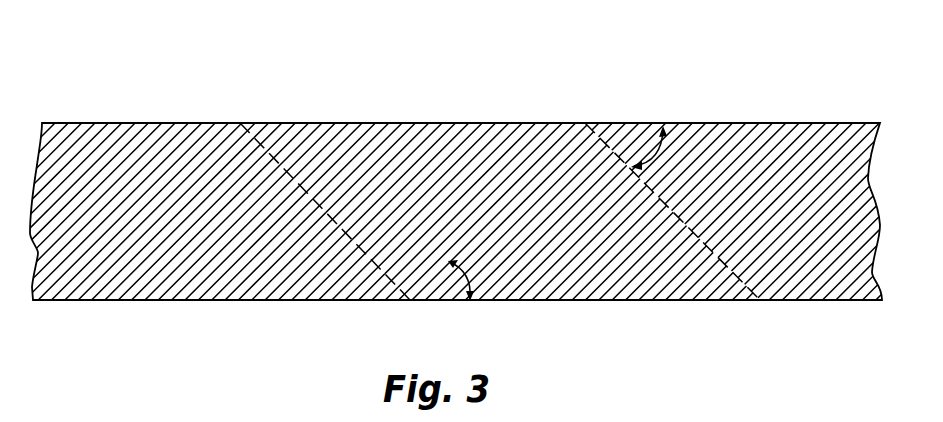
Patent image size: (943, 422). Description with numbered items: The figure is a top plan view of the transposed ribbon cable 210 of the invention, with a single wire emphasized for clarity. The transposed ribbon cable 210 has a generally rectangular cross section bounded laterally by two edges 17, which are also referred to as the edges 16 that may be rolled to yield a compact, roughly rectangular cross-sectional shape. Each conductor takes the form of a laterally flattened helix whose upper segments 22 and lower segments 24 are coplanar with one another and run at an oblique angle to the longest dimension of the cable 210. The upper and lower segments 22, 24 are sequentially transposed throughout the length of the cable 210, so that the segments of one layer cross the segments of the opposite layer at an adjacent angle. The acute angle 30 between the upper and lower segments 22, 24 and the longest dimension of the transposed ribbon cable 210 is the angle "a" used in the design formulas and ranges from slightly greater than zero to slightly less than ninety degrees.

The transposed ribbon cable 210 is at (759, 58).
The edges 16 is at (418, 121).
The edges 17 is at (185, 172).
The upper segments 22 is at (147, 208).
The lower segments 24 is at (387, 260).
The acute angle 30 is at (648, 130).